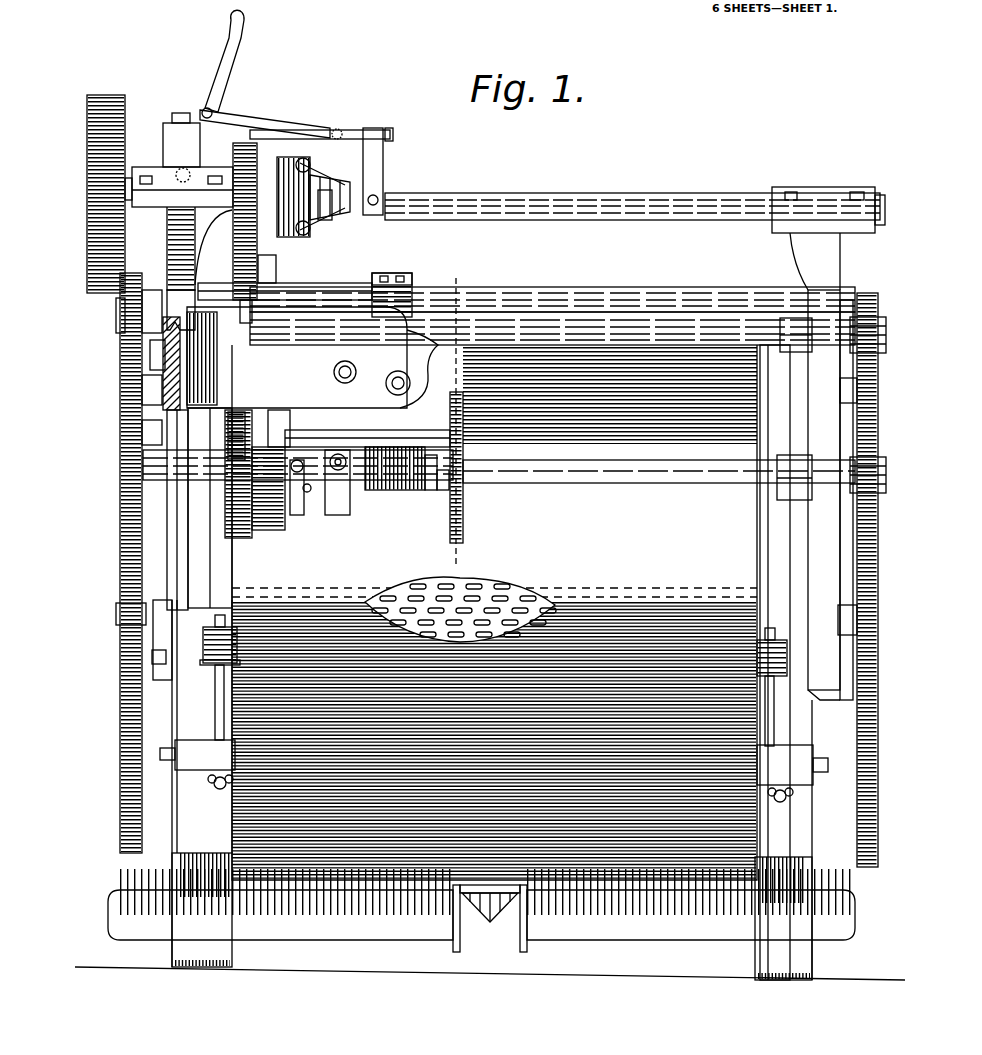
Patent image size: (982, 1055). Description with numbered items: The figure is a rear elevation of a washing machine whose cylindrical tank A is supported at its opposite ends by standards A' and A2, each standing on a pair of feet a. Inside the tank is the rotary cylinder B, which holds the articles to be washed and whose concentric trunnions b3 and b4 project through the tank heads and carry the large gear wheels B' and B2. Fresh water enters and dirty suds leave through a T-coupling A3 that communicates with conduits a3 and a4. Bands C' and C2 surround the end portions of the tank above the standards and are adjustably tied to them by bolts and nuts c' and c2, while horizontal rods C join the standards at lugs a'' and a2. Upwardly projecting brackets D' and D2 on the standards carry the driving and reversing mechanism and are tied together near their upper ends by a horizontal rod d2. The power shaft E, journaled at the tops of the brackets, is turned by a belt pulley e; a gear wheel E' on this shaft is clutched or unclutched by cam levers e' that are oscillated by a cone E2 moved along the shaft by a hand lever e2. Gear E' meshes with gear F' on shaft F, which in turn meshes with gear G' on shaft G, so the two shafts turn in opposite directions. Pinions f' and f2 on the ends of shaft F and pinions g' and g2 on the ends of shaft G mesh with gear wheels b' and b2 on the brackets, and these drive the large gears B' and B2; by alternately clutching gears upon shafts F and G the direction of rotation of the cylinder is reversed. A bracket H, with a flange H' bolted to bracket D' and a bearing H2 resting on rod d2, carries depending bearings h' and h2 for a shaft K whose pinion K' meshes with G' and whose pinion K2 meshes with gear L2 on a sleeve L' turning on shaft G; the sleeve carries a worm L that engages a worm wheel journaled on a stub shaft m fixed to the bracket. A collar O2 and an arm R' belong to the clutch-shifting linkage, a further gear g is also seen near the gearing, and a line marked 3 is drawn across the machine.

The belt pulley e is at (106, 168).
The hand lever e2 is at (244, 32).
The gear wheel E' is at (277, 198).
The cam levers e' is at (330, 172).
The power shaft E is at (635, 221).
The gear wheel F' is at (199, 268).
The pinion f' is at (202, 289).
The cone E2 is at (345, 236).
The bearing H2 is at (422, 275).
The section line 3 is at (452, 424).
The horizontal rod d2 is at (662, 296).
The horizontal shaft F is at (552, 298).
The cylindrical tank A is at (494, 612).
The rotary cylinder B is at (470, 597).
The bracket H is at (312, 357).
The flange H' is at (211, 358).
The stub shaft m is at (392, 378).
The large gear wheel B' is at (112, 563).
The gear wheel b' is at (123, 390).
The pinion g' is at (125, 437).
The trunnion b3 is at (136, 616).
The bracket D' is at (136, 510).
The band C' is at (247, 508).
The horizontal rods C is at (205, 726).
The gear wheel G' is at (207, 475).
The pinion K' is at (235, 416).
The gear wheel g is at (273, 517).
The bearing h' is at (276, 410).
The shaft K is at (367, 410).
The pinion K2 is at (478, 448).
The arm R' is at (304, 500).
The collar O2 is at (346, 490).
The worm L is at (395, 500).
The bearing h2 is at (430, 480).
The sleeve L' is at (430, 514).
The gear wheel L2 is at (464, 508).
The shaft G is at (659, 497).
The bolts and nuts c' is at (193, 677).
The lug a'' is at (188, 776).
The standard A' is at (157, 783).
The feet a is at (476, 935).
The standard A2 is at (806, 892).
The conduit a4 is at (422, 942).
The conduit a3 is at (636, 946).
The T-coupling A3 is at (506, 954).
The band C2 is at (762, 530).
The bracket D2 is at (806, 514).
The bolts and nuts c2 is at (778, 688).
The lug a2 is at (806, 762).
The large gear wheel B2 is at (856, 780).
The pinion f2 is at (868, 315).
The gear wheel b2 is at (856, 386).
The pinion g2 is at (856, 474).
The trunnion b4 is at (856, 622).